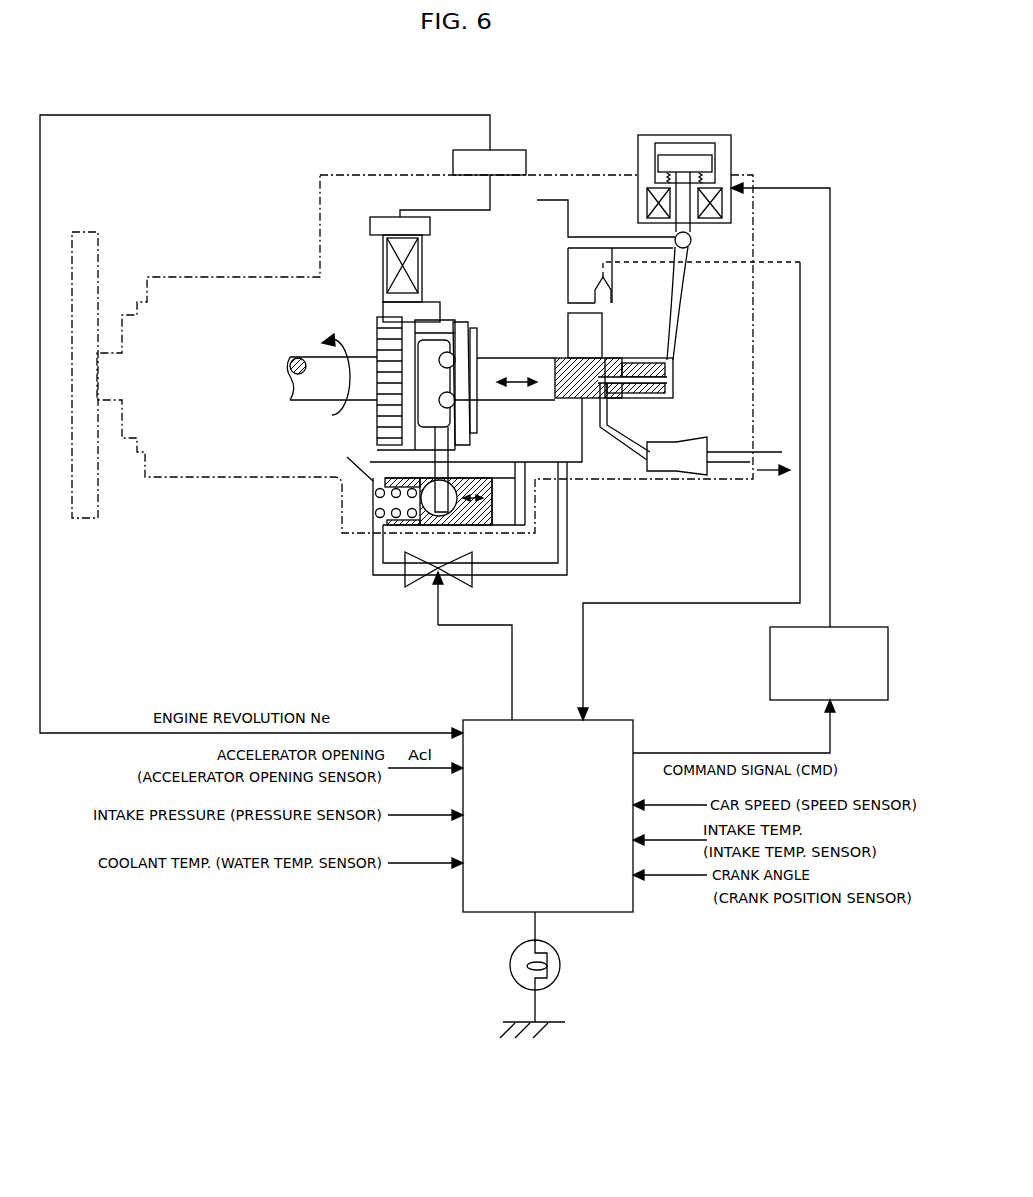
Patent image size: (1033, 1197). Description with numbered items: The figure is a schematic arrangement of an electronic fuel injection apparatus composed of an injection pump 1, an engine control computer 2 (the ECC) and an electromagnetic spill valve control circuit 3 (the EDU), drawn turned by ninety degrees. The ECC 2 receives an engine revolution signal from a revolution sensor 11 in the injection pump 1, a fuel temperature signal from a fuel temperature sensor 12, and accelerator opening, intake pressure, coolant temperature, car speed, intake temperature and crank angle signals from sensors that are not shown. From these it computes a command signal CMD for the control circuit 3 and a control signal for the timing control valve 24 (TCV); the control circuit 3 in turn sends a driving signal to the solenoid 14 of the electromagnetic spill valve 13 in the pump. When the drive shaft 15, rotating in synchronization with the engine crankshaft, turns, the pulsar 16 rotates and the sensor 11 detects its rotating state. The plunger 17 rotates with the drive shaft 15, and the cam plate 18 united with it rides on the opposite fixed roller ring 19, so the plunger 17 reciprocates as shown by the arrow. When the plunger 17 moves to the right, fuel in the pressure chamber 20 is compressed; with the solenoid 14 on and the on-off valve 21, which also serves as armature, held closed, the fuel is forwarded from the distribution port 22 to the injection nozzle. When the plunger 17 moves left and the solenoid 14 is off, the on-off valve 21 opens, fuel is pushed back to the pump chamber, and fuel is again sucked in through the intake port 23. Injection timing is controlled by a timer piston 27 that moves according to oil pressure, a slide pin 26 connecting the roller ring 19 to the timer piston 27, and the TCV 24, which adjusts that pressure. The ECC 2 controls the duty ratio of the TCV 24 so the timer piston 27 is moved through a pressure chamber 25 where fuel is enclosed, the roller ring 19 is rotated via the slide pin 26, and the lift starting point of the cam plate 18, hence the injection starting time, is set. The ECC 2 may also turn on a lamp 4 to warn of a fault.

The injection pump 1 is at (345, 173).
The engine control computer 2 is at (612, 720).
The electromagnetic spill valve control circuit 3 is at (770, 640).
The lamp 4 is at (510, 960).
The revolution sensor 11 is at (410, 260).
The fuel temperature sensor 12 is at (612, 300).
The electromagnetic spill valve 13 is at (563, 157).
The solenoid 14 is at (647, 205).
The drive shaft 15 is at (314, 356).
The pulsar 16 is at (383, 423).
The plunger 17 is at (520, 358).
The cam plate 18 is at (473, 332).
The roller ring 19 is at (450, 340).
The pressure chamber 20 is at (675, 382).
The on-off valve 21 is at (695, 232).
The distribution port 22 is at (623, 448).
The intake port 23 is at (605, 325).
The timing control valve 24 is at (412, 578).
The pressure chamber 25 is at (388, 502).
The slide pin 26 is at (445, 508).
The timer piston 27 is at (493, 520).